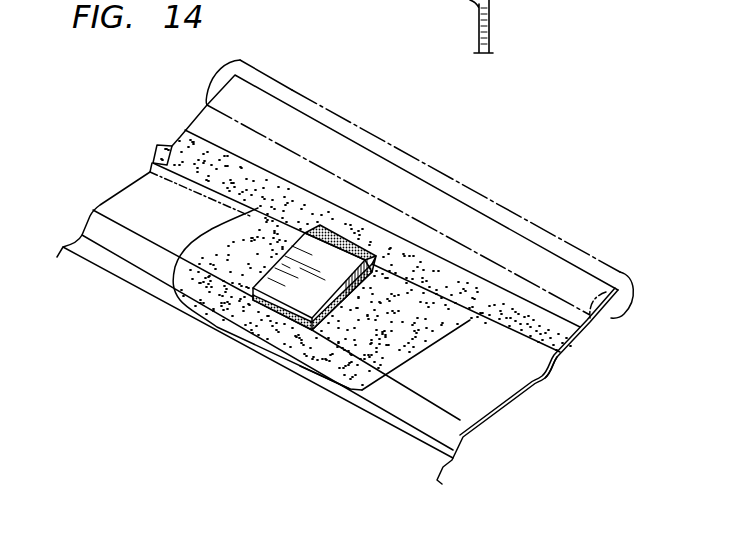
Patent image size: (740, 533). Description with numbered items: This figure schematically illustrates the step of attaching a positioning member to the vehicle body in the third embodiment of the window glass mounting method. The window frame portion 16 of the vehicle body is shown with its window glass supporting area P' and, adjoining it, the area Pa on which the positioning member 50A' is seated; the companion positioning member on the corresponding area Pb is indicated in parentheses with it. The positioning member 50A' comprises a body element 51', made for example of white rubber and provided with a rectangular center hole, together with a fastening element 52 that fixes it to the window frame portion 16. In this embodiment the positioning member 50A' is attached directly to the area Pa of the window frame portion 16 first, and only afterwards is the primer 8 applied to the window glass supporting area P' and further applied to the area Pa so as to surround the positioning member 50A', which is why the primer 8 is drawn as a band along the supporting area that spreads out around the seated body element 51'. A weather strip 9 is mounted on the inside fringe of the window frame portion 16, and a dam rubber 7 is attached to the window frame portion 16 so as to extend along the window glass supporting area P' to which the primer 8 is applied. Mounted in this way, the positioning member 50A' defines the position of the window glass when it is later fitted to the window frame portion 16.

The window frame portion 16 is at (145, 190).
The weather strip 9 is at (509, 211).
The dam rubber 7 is at (497, 357).
The primer 8 is at (430, 347).
The body element 51' is at (299, 379).
The fastening element 52 is at (226, 323).
The positioning member 50A' is at (381, 225).
The window glass supporting area P' is at (586, 352).
The area Pa is at (383, 341).